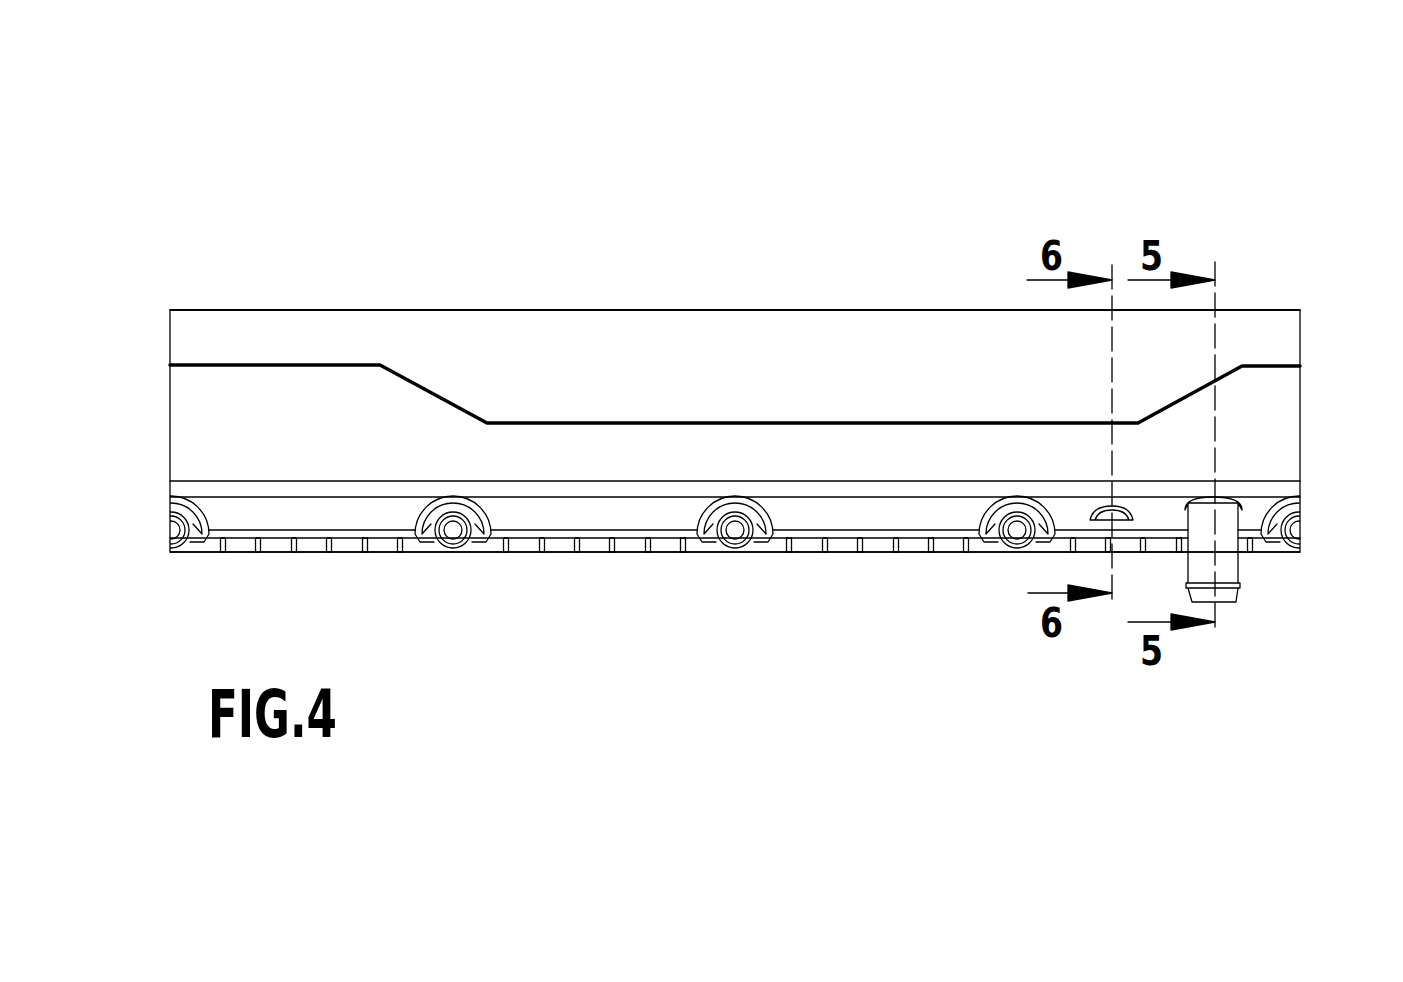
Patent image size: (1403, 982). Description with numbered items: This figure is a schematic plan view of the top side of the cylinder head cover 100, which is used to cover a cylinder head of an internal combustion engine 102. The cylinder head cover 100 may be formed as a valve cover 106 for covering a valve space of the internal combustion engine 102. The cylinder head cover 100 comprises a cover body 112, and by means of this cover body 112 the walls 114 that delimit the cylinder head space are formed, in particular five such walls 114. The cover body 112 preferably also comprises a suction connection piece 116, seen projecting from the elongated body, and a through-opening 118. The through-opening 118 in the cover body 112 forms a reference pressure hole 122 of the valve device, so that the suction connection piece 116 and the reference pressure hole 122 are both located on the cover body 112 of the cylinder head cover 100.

The cylinder head cover 100 is at (1178, 175).
The internal combustion engine 102 is at (1095, 165).
The valve cover 106 is at (1251, 193).
The cover body 112 is at (352, 398).
The walls 114 is at (265, 330).
The suction connection piece 116 is at (1227, 572).
The through-opening 118 is at (1122, 520).
The reference pressure hole 122 is at (1118, 508).